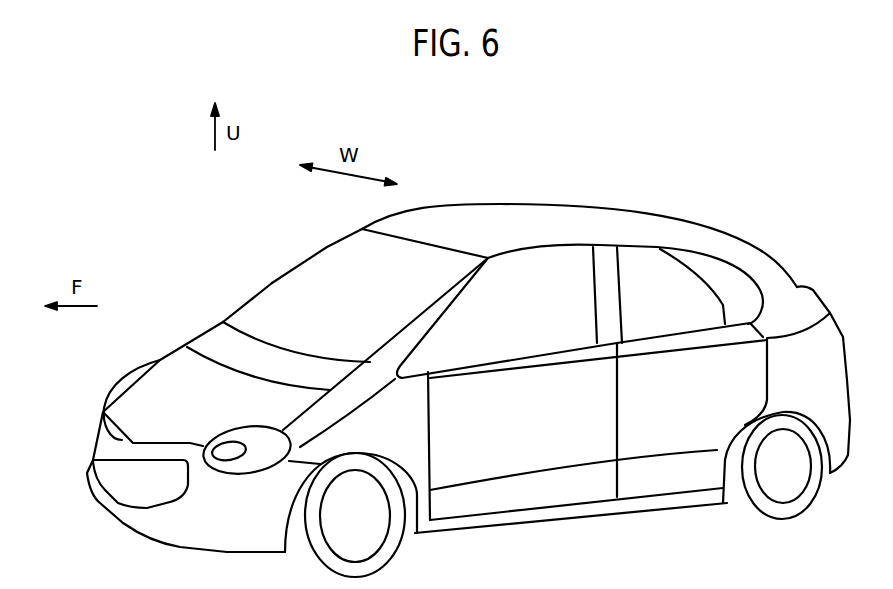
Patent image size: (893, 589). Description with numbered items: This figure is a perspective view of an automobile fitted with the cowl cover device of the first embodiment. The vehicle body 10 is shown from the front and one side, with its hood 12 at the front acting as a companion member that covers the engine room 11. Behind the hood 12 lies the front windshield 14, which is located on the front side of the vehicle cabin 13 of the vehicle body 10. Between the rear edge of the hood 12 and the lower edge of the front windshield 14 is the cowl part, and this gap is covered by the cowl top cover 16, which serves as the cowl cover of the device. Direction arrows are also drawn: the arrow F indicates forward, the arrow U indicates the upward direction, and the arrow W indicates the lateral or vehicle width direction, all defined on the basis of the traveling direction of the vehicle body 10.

The vehicle body 10 is at (618, 194).
The engine room 11 is at (127, 402).
The hood 12 is at (163, 372).
The vehicle cabin 13 is at (330, 260).
The front windshield 14 is at (275, 292).
The cowl top cover 16 is at (195, 340).